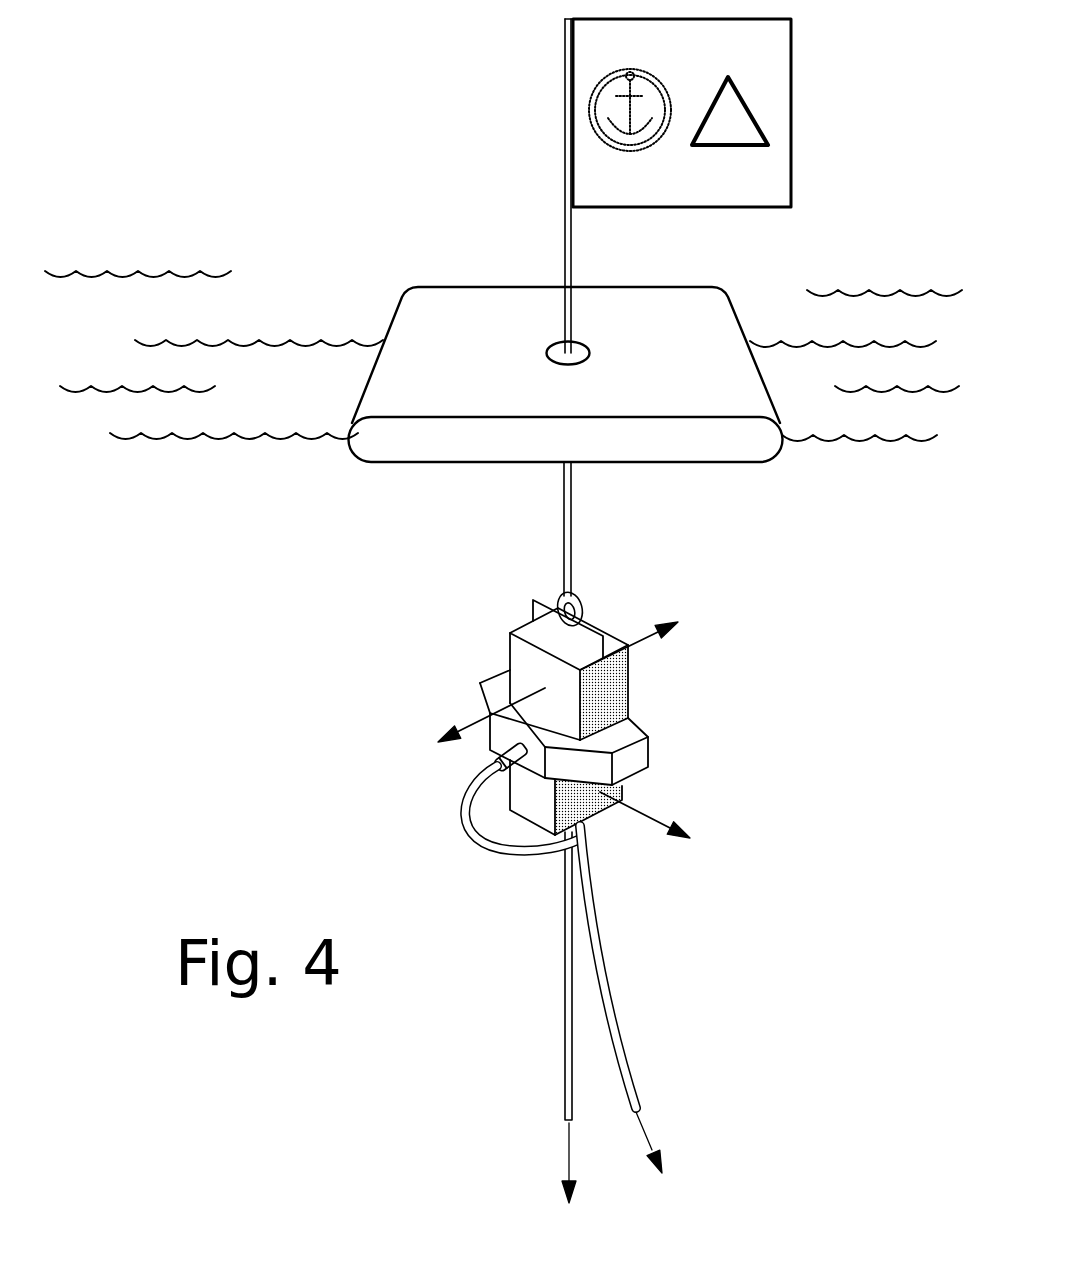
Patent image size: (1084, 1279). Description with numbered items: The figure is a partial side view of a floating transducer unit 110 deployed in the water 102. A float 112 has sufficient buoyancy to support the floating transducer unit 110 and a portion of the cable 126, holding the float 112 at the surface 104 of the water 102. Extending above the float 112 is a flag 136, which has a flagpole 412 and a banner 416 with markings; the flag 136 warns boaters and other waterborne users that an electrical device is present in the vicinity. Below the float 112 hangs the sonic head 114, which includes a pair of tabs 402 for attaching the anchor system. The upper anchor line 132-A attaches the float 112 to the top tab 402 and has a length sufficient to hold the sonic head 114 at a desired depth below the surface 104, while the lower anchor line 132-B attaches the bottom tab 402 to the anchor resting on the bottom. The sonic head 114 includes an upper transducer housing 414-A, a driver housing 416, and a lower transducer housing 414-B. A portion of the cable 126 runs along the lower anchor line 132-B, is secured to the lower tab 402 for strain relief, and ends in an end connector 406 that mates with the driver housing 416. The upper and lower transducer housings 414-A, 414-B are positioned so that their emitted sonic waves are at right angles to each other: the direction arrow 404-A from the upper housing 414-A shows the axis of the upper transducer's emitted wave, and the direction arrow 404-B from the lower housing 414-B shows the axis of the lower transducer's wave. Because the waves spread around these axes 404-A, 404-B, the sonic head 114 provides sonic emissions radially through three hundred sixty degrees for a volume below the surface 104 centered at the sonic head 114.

The water 102 is at (228, 184).
The surface 104 is at (294, 394).
The floating transducer unit 110 is at (803, 1058).
The float 112 is at (725, 465).
The sonic head 114 is at (648, 747).
The cable 126 is at (614, 1033).
The upper anchor line 132-A is at (565, 553).
The lower anchor line 132-B is at (563, 1073).
The flag 136 is at (462, 76).
The tab 402 is at (583, 612).
The direction arrow 404-A is at (470, 720).
The direction arrow 404-B is at (657, 830).
The end connector 406 is at (494, 762).
The flagpole 412 is at (565, 257).
The upper transducer housing 414-A is at (628, 683).
The lower transducer housing 414-B is at (628, 787).
The banner 416 is at (791, 135).